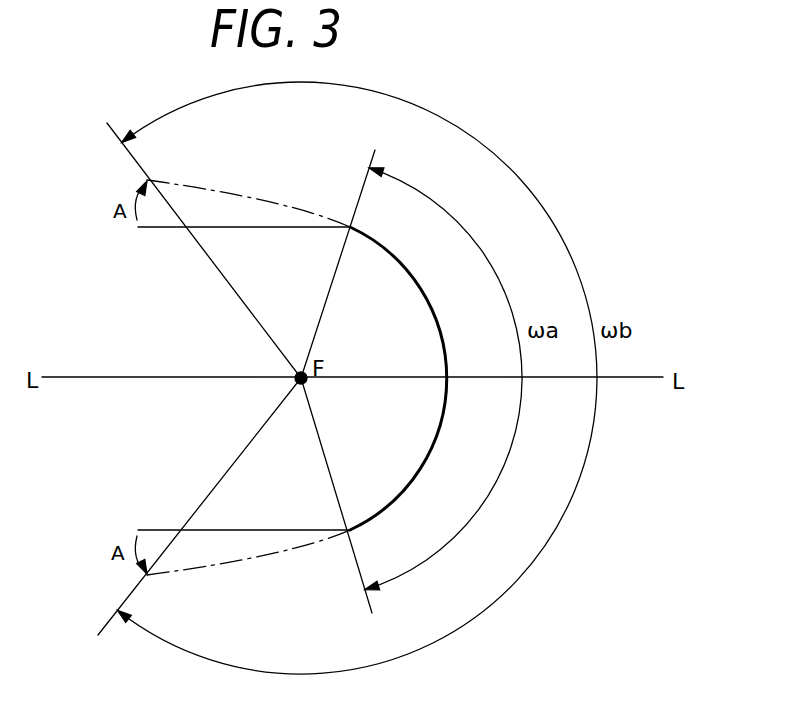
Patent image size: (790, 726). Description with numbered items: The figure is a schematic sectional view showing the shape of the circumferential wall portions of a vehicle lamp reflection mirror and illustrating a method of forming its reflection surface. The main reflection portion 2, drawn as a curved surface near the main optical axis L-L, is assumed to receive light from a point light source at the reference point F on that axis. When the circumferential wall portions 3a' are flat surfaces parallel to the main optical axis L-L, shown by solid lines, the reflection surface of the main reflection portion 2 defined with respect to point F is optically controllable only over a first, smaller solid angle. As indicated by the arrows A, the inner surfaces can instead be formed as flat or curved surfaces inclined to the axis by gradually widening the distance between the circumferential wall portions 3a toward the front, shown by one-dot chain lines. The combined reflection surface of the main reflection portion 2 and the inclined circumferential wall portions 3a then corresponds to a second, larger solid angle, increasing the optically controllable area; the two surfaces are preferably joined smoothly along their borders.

The main reflection portion 2 is at (425, 302).
The upper and lower circumferential wall portions 3a is at (248, 389).
The circumferential wall portions (parallel flat surfaces) 3a' is at (221, 378).